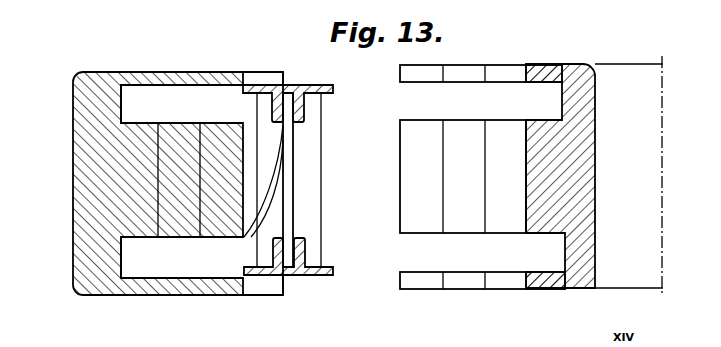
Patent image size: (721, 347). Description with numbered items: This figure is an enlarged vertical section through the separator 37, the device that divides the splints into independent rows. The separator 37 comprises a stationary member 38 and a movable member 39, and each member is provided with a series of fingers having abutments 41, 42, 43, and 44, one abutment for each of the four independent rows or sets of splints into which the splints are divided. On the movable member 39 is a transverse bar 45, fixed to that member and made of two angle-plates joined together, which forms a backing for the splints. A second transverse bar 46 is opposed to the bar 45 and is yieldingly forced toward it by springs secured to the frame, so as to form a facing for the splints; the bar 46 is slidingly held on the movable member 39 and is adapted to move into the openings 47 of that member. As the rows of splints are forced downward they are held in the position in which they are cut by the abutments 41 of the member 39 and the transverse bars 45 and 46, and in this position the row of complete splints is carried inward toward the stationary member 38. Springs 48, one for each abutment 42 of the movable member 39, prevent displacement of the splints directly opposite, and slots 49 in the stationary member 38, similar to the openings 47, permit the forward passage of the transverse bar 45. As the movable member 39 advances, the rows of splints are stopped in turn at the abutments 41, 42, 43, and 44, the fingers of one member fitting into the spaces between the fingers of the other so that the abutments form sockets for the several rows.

The separator 37 is at (495, 62).
The stationary member 38 is at (571, 65).
The movable member 39 is at (73, 157).
The abutments 41 is at (283, 72).
The abutments 42 is at (444, 233).
The abutments 43 is at (485, 289).
The abutments 44 is at (526, 233).
The transverse bar 45 is at (323, 86).
The transverse bar 46 is at (253, 95).
The openings 47 is at (165, 97).
The springs 48 is at (271, 196).
The openings or slots 49 is at (432, 97).